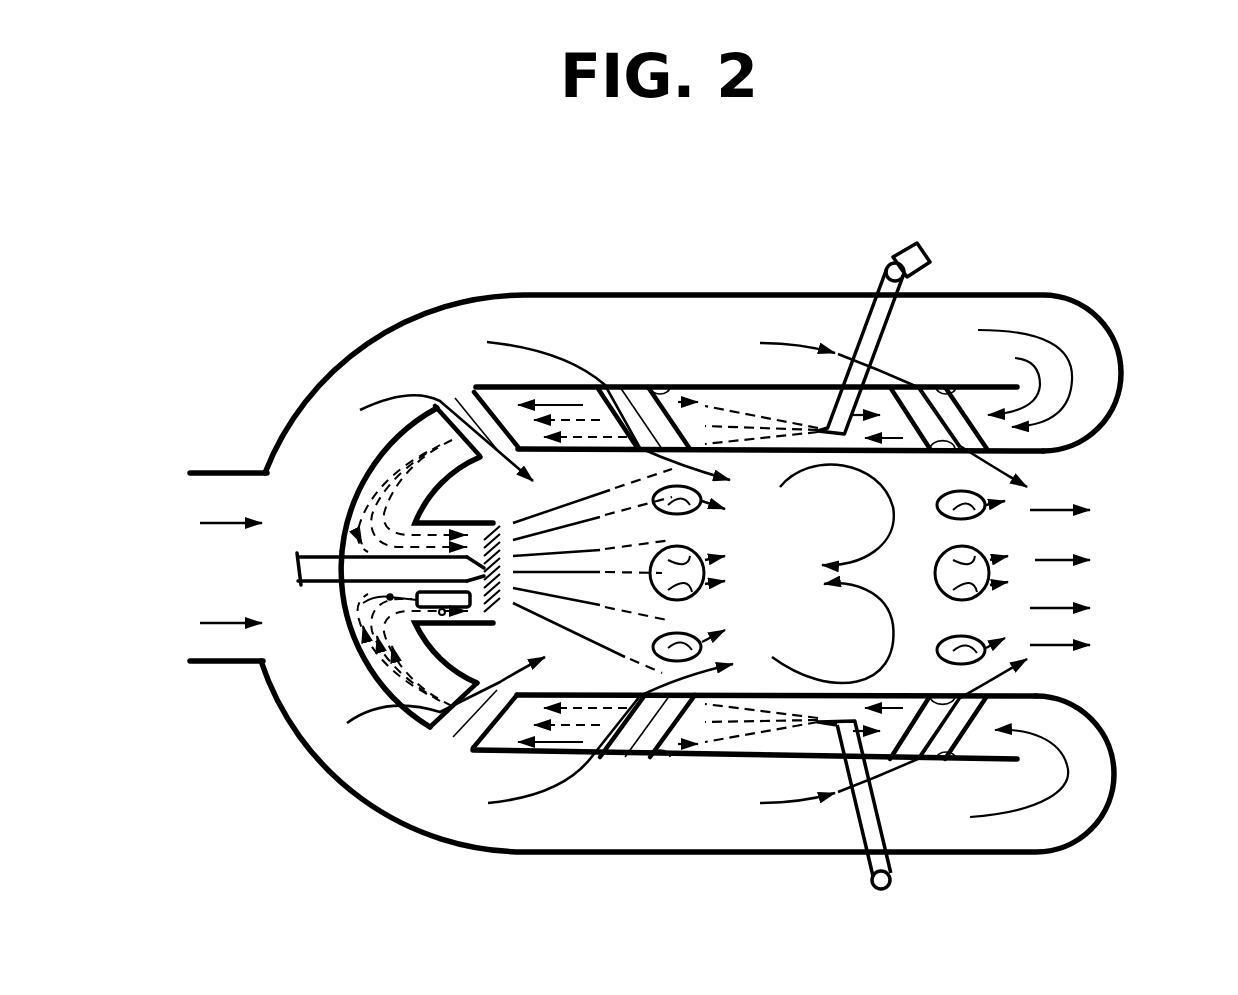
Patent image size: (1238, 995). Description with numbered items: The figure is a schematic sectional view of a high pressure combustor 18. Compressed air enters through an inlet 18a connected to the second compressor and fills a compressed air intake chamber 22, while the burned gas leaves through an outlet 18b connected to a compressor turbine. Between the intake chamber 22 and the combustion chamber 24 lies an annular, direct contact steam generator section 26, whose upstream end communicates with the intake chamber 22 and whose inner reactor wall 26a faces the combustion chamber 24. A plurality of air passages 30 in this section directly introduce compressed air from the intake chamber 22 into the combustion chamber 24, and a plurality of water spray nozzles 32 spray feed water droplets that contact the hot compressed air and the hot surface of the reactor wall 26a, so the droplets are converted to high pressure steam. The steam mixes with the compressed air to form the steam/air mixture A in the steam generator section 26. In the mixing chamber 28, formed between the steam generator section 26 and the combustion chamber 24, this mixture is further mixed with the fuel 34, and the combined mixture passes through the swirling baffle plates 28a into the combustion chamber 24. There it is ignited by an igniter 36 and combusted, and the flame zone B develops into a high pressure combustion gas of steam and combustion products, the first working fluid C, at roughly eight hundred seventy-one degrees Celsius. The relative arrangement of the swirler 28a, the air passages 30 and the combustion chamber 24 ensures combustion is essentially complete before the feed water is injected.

The combustor 18 is at (873, 246).
The inlet 18a is at (232, 473).
The outlet 18b is at (1057, 487).
The compressed air intake chamber 22 is at (580, 317).
The combustion chamber 24 is at (793, 571).
The direct contact steam generator section 26 is at (690, 387).
The reactor wall 26a is at (760, 450).
The mixing chamber 28 is at (390, 688).
The swirling baffle plates 28a is at (495, 535).
The air passages 30 is at (468, 395).
The water spray nozzles 32 is at (824, 290).
The fuel 34 is at (318, 573).
The igniter 36 is at (447, 612).
The steam/air mixture A is at (375, 456).
The flame / recirculation zone B is at (705, 628).
The first working fluid C is at (1060, 511).